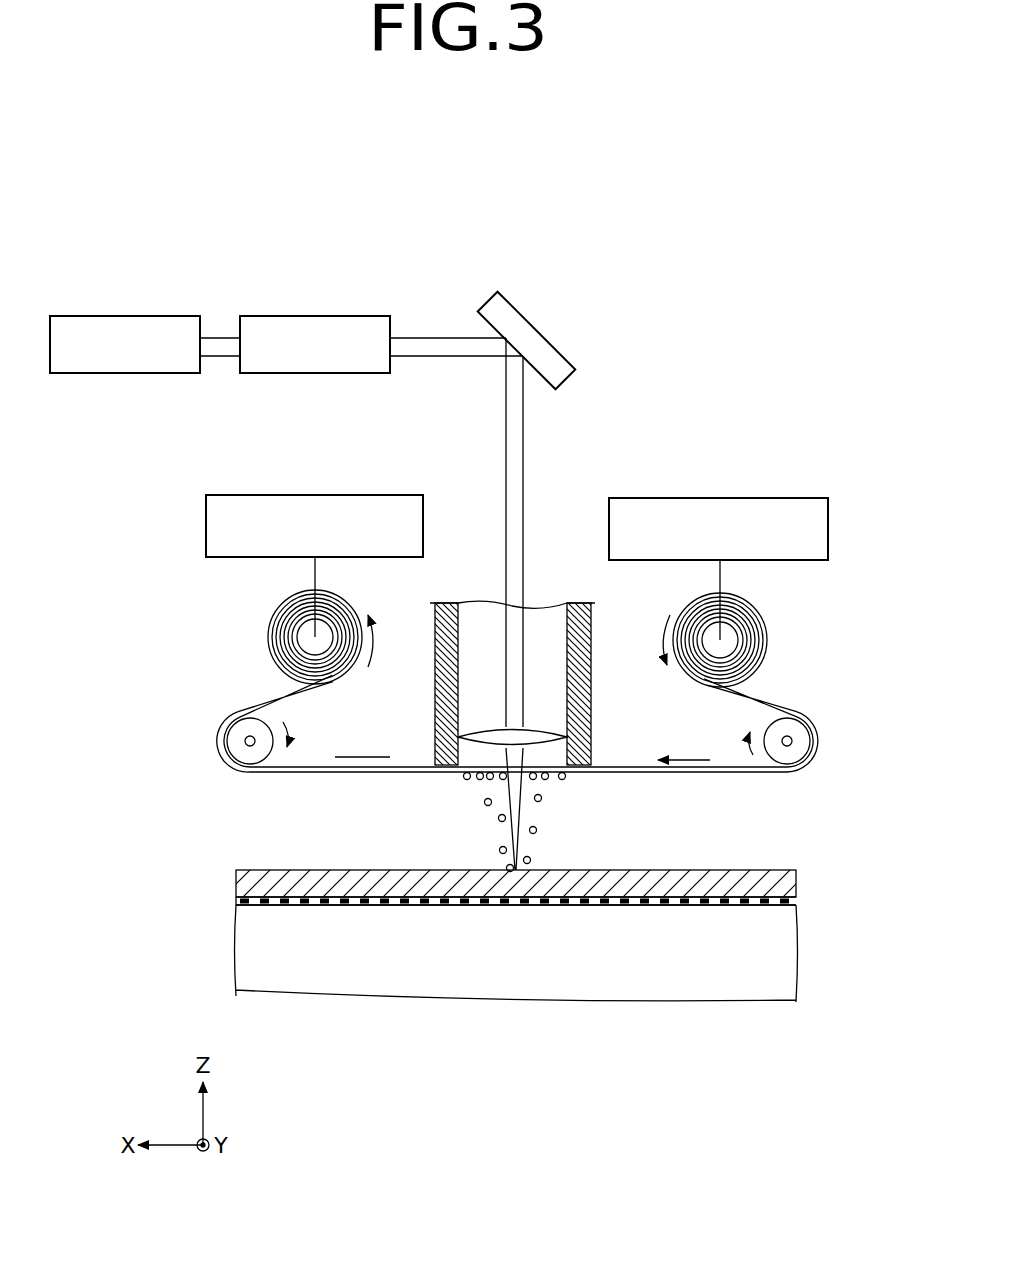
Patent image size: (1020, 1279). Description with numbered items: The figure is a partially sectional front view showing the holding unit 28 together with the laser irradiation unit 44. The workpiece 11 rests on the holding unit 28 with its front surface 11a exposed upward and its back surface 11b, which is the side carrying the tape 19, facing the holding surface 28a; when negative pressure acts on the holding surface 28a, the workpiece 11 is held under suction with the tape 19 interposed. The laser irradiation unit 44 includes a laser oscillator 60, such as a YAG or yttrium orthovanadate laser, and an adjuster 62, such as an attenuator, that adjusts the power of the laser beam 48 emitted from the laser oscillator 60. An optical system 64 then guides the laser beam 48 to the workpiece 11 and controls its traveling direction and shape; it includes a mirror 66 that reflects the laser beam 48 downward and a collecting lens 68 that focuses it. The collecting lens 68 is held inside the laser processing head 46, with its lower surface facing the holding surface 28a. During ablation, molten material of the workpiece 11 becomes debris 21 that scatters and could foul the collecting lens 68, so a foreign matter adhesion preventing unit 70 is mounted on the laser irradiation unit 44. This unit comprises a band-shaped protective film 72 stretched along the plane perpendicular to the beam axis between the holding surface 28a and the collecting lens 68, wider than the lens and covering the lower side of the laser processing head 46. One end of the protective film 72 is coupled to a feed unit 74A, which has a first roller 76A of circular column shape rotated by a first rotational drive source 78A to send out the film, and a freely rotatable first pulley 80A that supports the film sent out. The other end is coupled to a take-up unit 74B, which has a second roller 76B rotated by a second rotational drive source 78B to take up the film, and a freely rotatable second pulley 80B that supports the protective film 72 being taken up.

The laser irradiation unit 44 is at (176, 182).
The laser oscillator 60 is at (112, 316).
The adjuster 62 is at (313, 316).
The laser beam 48 is at (217, 342).
The mirror 66 is at (535, 338).
The optical system 64 is at (534, 471).
The laser processing head 46 is at (448, 603).
The collecting lens 68 is at (527, 737).
The foreign matter adhesion preventing unit 70 is at (186, 515).
The second rotational drive source 78B is at (315, 495).
The first rotational drive source 78A is at (721, 498).
The second roller 76B is at (297, 637).
The first roller 76A is at (738, 640).
The second pulley 80B is at (229, 740).
The first pulley 80A is at (812, 743).
The take-up unit 74B is at (247, 693).
The feed unit 74A is at (775, 697).
The protective film 72 is at (340, 773).
The debris 21 is at (538, 798).
The workpiece 11 is at (227, 878).
The front surface 11a is at (273, 870).
The back surface 11b is at (283, 903).
The tape 19 is at (237, 901).
The holding unit 28 is at (652, 1008).
The holding surface 28a is at (688, 900).